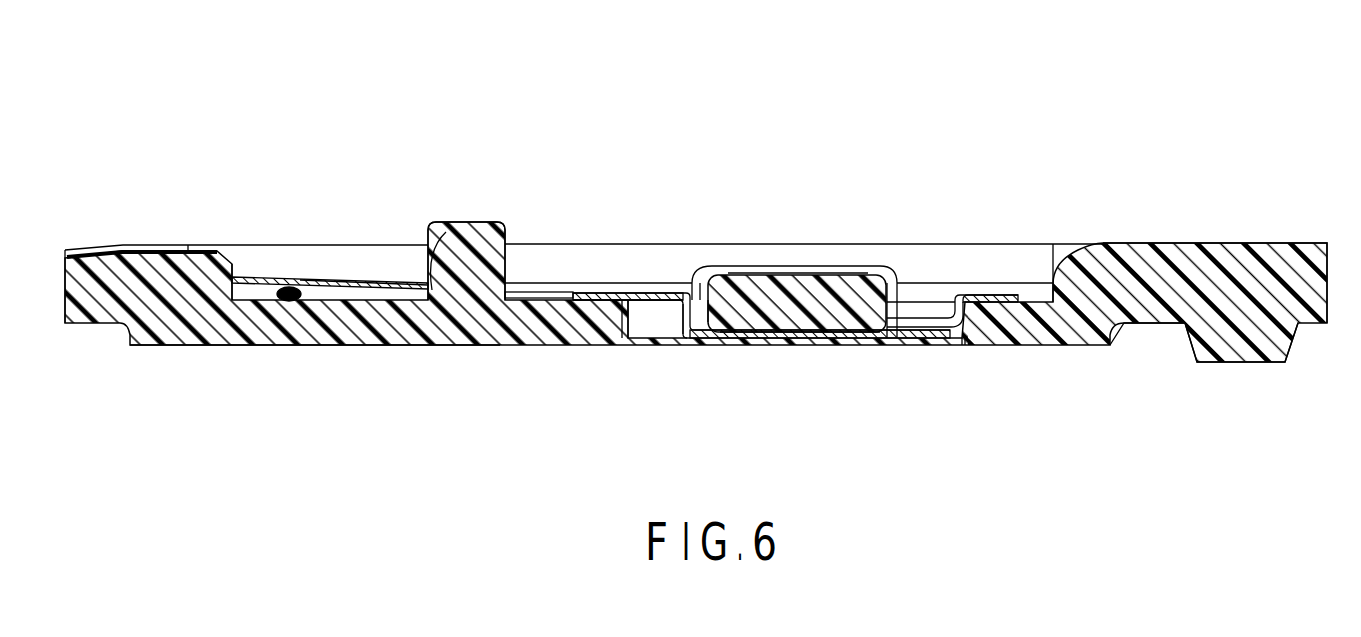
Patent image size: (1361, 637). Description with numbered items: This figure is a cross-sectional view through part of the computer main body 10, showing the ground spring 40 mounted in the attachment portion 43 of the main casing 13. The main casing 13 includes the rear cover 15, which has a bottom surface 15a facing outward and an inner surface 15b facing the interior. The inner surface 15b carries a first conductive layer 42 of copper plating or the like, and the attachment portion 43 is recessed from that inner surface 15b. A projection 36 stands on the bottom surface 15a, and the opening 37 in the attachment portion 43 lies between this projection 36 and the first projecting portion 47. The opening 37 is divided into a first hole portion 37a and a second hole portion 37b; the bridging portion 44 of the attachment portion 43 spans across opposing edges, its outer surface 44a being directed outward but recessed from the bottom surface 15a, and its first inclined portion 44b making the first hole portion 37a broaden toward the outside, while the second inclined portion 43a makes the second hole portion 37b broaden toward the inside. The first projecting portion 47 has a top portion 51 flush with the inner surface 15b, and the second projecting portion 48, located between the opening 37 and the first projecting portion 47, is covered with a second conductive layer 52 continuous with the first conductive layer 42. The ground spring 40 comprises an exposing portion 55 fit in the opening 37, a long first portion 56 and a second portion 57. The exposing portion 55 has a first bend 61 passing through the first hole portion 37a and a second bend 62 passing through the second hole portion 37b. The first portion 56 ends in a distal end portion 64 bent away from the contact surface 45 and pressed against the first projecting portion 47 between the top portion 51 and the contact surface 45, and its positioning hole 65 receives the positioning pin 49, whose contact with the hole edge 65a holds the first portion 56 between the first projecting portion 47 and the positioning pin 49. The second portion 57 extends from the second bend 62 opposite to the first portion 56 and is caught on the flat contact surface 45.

The computer main body 10 is at (165, 119).
The main casing 13 is at (160, 250).
The rear cover 15 is at (86, 260).
The bottom surface 15a is at (176, 346).
The inner surface 15b is at (1199, 244).
The projection 36 is at (1250, 363).
The opening 37 is at (657, 331).
The first hole portion 37a is at (641, 320).
The second hole portion 37b is at (922, 304).
The ground spring 40 is at (608, 288).
The first conductive layer 42 is at (1285, 244).
The attachment portion 43 is at (372, 294).
The second inclined portion 43a is at (972, 298).
The bridging portion 44 is at (813, 274).
The outer surface 44a is at (806, 335).
The first inclined portion 44b is at (712, 333).
The contact surface 45 is at (1036, 300).
The first projecting portion 47 is at (194, 262).
The second projecting portion 48 is at (291, 290).
The positioning pin 49 is at (483, 222).
The top portion 51 is at (208, 252).
The second conductive layer 52 is at (270, 281).
The exposing portion 55 is at (876, 340).
The first portion 56 is at (637, 292).
The second portion 57 is at (997, 325).
The first bend 61 is at (684, 332).
The second bend 62 is at (960, 343).
The distal end portion 64 is at (250, 346).
The positioning hole 65 is at (548, 292).
The hole edge 65a is at (445, 285).